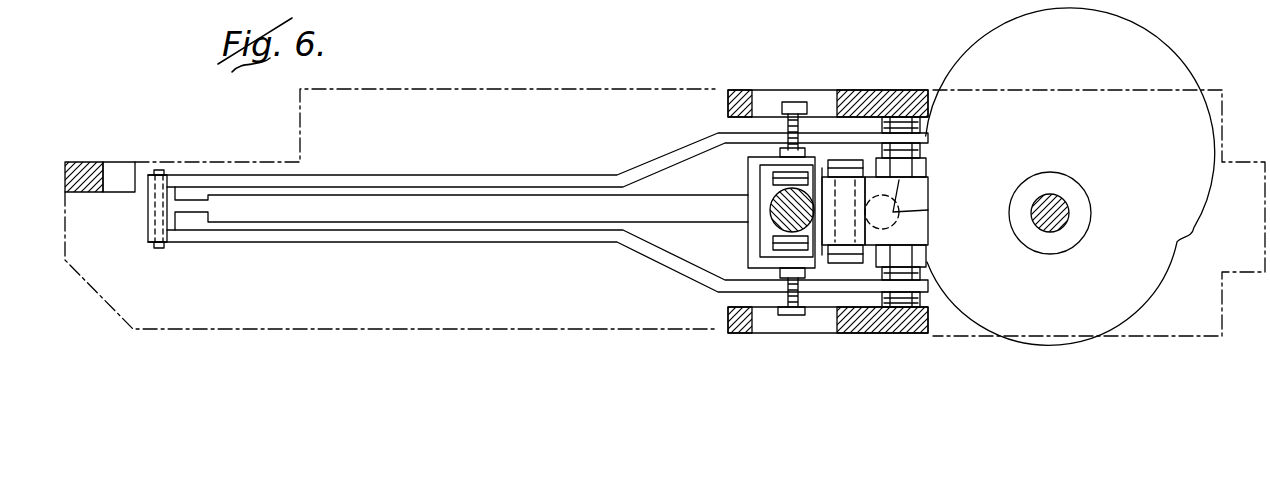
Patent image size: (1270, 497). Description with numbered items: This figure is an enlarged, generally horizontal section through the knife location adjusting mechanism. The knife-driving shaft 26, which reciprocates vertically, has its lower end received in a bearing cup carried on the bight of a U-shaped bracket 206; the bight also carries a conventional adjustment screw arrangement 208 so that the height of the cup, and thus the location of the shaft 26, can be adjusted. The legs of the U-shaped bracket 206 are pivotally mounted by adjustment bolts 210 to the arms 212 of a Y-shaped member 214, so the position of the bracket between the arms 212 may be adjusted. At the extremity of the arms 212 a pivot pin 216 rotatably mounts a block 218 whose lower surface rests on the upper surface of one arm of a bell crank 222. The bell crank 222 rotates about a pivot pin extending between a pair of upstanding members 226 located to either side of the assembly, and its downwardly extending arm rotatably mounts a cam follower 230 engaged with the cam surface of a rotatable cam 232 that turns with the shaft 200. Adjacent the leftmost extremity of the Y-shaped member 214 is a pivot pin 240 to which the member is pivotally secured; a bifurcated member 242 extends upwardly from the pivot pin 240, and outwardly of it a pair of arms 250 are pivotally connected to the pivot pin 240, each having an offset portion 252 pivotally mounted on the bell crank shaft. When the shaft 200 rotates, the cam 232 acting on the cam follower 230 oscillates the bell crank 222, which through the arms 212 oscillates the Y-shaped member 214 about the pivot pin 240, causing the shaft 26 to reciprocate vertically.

The shaft 200 is at (1060, 218).
The rotatable cam 232 is at (1112, 84).
The upstanding members 226 is at (918, 95).
The arms 212 is at (927, 160).
The bell crank 222 is at (955, 195).
The cam follower 230 is at (928, 215).
The block 218 is at (862, 231).
The pivot pin 216 is at (845, 168).
The U-shaped bracket 206 is at (810, 170).
The adjustment screw arrangement 208 is at (772, 177).
The shaft 26 is at (775, 210).
The adjustment bolts 210 is at (792, 100).
The offset portion 252 is at (722, 132).
The Y-shaped member 214 is at (458, 210).
The arms 250 is at (331, 178).
The bifurcated member 242 is at (153, 193).
The pivot pin 240 is at (157, 247).